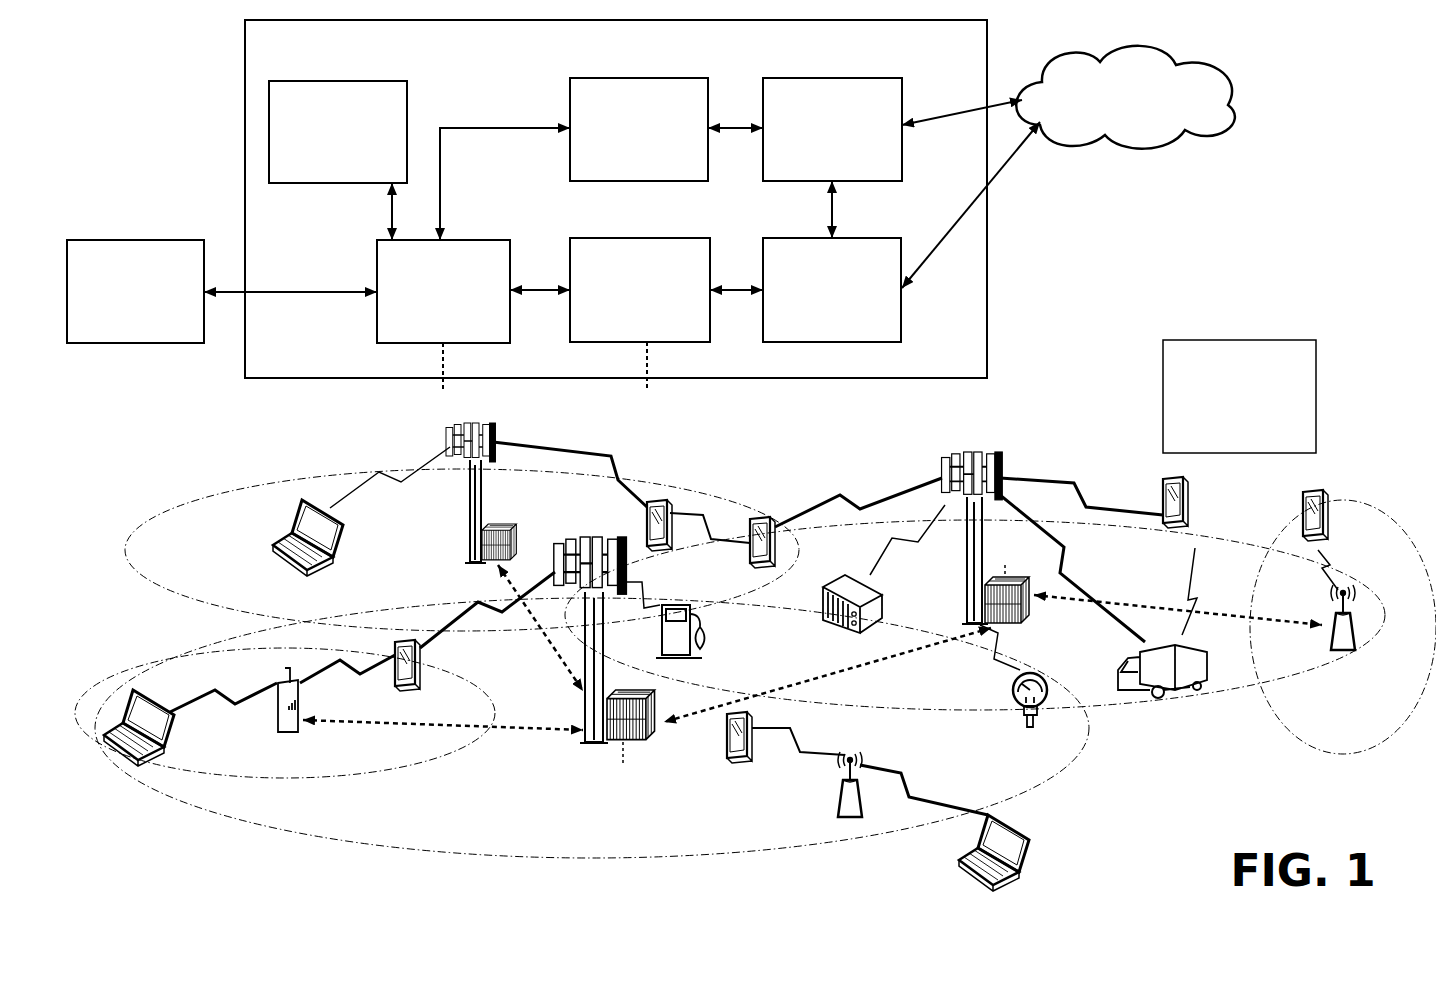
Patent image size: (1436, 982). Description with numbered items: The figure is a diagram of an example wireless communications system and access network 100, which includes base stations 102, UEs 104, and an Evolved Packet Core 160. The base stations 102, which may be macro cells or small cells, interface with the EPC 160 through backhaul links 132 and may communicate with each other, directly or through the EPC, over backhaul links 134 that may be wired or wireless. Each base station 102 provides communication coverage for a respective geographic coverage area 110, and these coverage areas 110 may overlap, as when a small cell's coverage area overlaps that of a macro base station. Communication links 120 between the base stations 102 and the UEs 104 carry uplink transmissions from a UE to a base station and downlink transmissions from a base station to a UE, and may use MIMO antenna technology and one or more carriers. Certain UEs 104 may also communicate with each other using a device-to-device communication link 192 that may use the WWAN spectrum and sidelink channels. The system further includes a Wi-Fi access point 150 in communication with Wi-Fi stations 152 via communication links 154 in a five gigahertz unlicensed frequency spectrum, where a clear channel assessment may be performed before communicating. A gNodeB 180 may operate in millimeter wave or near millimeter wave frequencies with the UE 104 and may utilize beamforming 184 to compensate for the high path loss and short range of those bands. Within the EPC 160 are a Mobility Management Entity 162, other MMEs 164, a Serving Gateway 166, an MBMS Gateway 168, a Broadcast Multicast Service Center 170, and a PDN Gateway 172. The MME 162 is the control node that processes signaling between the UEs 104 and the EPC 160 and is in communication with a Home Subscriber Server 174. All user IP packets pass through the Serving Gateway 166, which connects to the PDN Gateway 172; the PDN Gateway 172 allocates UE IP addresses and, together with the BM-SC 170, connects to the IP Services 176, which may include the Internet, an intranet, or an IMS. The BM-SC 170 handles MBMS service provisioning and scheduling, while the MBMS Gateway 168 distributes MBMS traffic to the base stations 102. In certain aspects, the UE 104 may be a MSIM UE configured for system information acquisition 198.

The wireless communications system and access network 100 is at (150, 78).
The base station 102 is at (470, 540).
The UE 104 is at (325, 572).
The geographic coverage area 110 is at (182, 612).
The communication link 120 is at (388, 474).
The backhaul link 132 is at (445, 385).
The backhaul link 134 is at (552, 652).
The Wi-Fi access point 150 is at (850, 818).
The Wi-Fi station 152 is at (724, 738).
The communication link 154 is at (796, 734).
The Evolved Packet Core 160 is at (622, 199).
The Mobility Management Entity 162 is at (462, 240).
The other MMEs 164 is at (332, 81).
The Serving Gateway 166 is at (668, 238).
The MBMS Gateway 168 is at (626, 78).
The Broadcast Multicast Service Center 170 is at (879, 78).
The PDN Gateway 172 is at (879, 238).
The Home Subscriber Server 174 is at (172, 240).
The IP Services 176 is at (1176, 53).
The gNodeB 180 is at (1358, 640).
The beamforming 184 is at (1335, 568).
The D2D communication link 192 is at (704, 532).
The MSIM UE configured for system information acquisition 198 is at (1172, 478).